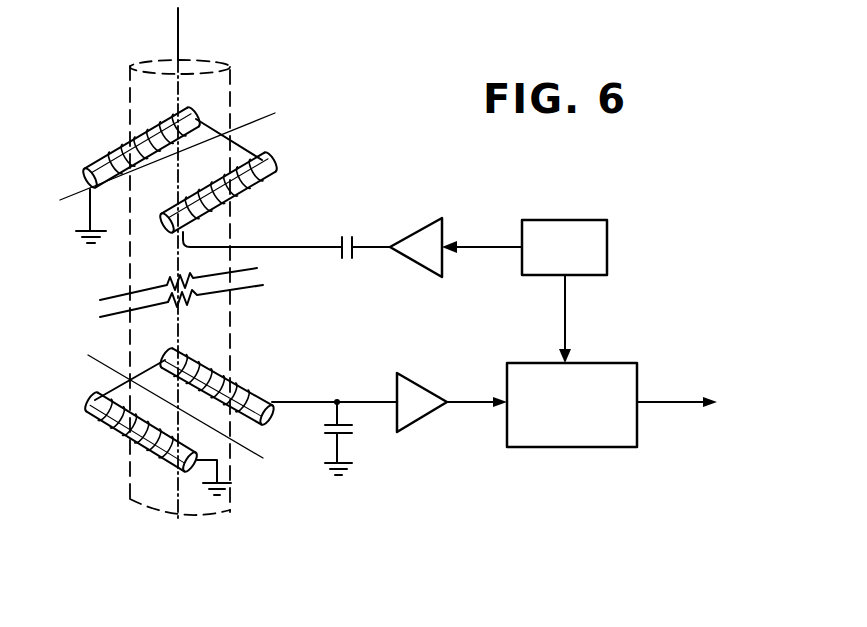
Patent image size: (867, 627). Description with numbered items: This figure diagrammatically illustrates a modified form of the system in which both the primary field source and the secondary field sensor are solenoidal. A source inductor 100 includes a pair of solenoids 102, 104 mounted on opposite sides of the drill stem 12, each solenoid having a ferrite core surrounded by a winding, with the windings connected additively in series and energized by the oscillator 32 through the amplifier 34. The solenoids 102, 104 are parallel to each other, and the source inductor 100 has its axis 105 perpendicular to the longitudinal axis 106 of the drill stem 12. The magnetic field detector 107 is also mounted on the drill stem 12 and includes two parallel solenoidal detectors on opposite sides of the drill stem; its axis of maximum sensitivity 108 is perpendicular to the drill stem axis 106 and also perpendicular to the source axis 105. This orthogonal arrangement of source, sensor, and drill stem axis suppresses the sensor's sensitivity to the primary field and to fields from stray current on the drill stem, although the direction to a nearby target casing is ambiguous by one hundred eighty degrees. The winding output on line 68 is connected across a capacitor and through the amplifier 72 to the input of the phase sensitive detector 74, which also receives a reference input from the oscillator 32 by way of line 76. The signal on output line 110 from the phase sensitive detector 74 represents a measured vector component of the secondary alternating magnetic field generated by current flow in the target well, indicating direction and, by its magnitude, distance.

The longitudinal axis of the drill stem 106 is at (178, 22).
The drill stem 12 is at (234, 100).
The source inductor 100 is at (98, 139).
The solenoid 102 is at (72, 194).
The axis of the source inductor 105 is at (273, 113).
The solenoid 104 is at (276, 160).
The amplifier 34 is at (420, 229).
The oscillator 32 is at (546, 220).
The line 76 is at (568, 322).
The phase sensitive detector 74 is at (568, 448).
The amplifier 72 is at (416, 386).
The line 68 is at (294, 402).
The magnetic field detector 107 is at (108, 446).
The axis of maximum sensitivity 108 is at (263, 460).
The output line 110 is at (686, 404).